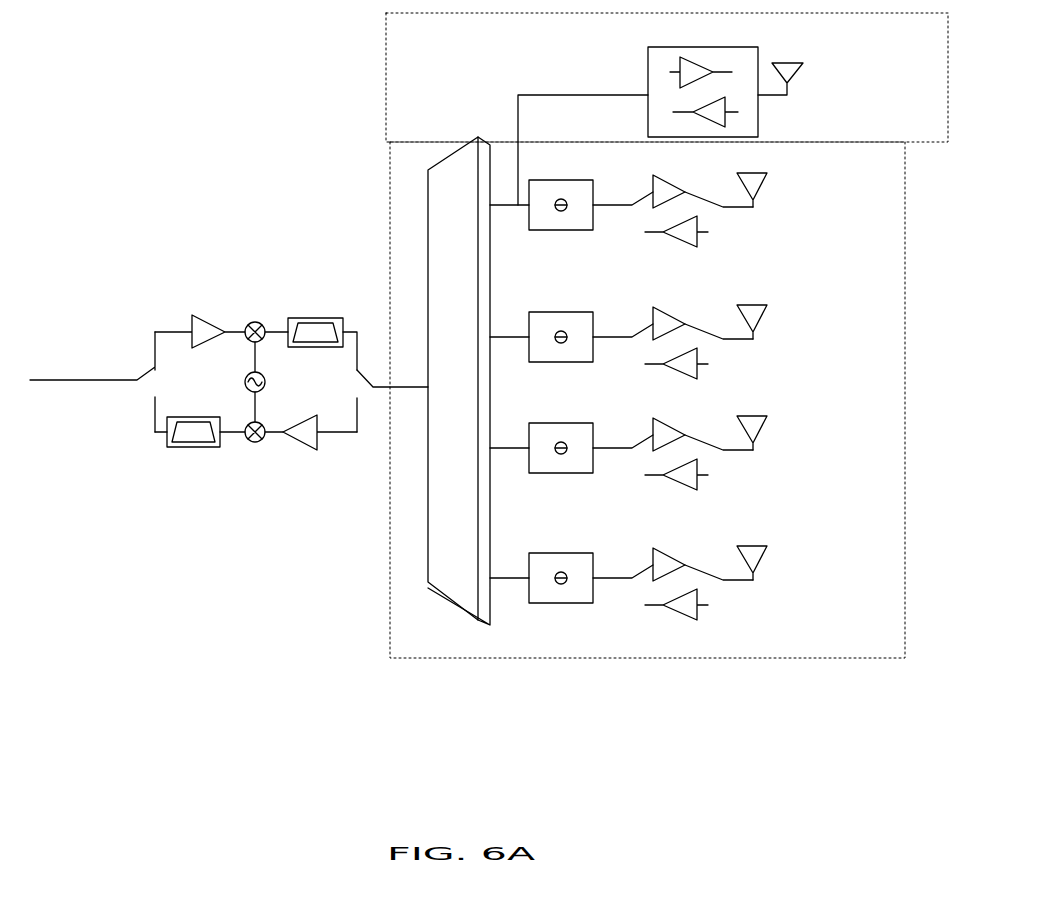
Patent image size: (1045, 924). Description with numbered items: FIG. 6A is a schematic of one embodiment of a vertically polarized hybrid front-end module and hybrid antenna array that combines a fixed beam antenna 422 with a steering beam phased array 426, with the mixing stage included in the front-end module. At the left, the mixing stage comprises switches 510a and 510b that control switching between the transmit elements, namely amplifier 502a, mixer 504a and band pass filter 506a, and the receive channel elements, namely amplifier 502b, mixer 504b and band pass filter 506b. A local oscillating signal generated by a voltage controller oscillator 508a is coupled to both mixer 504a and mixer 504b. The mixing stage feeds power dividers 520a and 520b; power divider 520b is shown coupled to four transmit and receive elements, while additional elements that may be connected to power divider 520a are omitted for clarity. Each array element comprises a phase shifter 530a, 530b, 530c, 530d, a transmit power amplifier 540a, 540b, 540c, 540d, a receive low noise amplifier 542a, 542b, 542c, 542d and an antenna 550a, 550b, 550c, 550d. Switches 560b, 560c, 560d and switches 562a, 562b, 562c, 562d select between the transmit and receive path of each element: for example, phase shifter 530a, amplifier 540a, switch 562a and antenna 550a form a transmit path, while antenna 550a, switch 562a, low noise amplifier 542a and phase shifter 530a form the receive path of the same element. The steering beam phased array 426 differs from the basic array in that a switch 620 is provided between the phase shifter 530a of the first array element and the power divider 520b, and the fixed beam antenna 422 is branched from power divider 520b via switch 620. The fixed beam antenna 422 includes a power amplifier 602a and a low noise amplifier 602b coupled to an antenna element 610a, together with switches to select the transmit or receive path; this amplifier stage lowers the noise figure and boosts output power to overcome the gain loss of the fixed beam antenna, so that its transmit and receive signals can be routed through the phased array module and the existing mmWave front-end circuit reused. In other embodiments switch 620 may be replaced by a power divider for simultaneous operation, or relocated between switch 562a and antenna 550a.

The fixed beam antenna 422 is at (385, 53).
The steering beam phased array 426 is at (390, 215).
The switch 510a is at (146, 371).
The switch 510b is at (364, 375).
The amplifier 502a is at (180, 312).
The amplifier 502b is at (320, 448).
The mixer 504a is at (253, 320).
The mixer 504b is at (255, 445).
The band pass filter 506a is at (326, 318).
The band pass filter 506b is at (190, 448).
The voltage controller oscillator 508a is at (245, 378).
The power divider 520a is at (457, 152).
The power divider 520b is at (490, 147).
The power amplifier 602a is at (697, 52).
The low noise amplifier 602b is at (723, 130).
The antenna element 610a is at (792, 62).
The switch 620 is at (505, 203).
The phase shifter 530a is at (572, 178).
The phase shifter 530b is at (572, 310).
The phase shifter 530c is at (572, 422).
The phase shifter 530d is at (572, 552).
The transmit power amplifier 540a is at (672, 175).
The transmit power amplifier 540b is at (672, 307).
The transmit power amplifier 540c is at (672, 418).
The transmit power amplifier 540d is at (672, 548).
The receive low noise amplifier 542a is at (700, 247).
The receive low noise amplifier 542b is at (700, 379).
The receive low noise amplifier 542c is at (700, 490).
The receive low noise amplifier 542d is at (700, 620).
The antenna 550a is at (765, 173).
The antenna 550b is at (765, 305).
The antenna 550c is at (765, 416).
The antenna 550d is at (765, 546).
The switch 562a is at (718, 205).
The switch 562b is at (718, 337).
The switch 562c is at (718, 448).
The switch 562d is at (718, 578).
The switch 560b is at (623, 335).
The switch 560c is at (623, 446).
The switch 560d is at (623, 576).